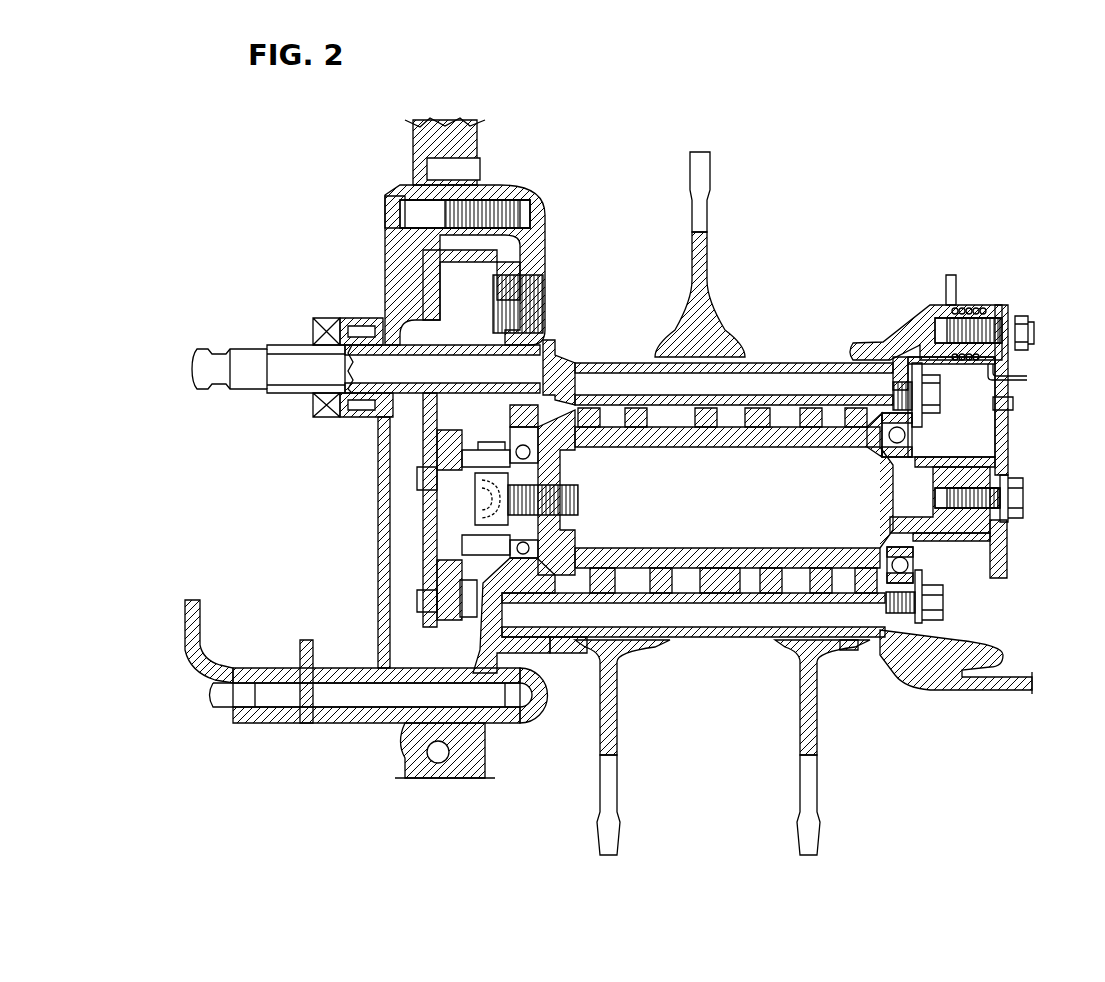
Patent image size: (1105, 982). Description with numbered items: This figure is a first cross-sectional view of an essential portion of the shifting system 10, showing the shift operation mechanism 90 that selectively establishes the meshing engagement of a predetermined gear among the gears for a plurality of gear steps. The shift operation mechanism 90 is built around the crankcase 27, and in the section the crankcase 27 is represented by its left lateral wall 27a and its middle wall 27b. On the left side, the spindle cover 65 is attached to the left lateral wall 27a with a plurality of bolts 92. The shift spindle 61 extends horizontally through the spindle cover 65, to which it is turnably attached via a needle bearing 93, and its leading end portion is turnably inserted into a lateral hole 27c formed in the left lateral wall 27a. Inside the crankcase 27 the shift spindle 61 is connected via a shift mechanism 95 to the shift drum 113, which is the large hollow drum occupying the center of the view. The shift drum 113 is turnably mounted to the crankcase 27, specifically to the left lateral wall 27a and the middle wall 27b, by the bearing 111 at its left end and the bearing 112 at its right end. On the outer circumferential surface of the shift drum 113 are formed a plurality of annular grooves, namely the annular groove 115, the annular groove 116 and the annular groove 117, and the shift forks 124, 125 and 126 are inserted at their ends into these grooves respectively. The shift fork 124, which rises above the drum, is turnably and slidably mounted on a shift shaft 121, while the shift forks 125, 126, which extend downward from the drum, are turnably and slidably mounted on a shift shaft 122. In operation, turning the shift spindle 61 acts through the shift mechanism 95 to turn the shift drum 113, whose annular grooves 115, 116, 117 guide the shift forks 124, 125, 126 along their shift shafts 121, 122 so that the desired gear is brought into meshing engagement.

The shifting system 10 is at (216, 160).
The shift operation mechanism 90 is at (230, 255).
The bolts 92 is at (385, 212).
The needle bearing 93 is at (385, 342).
The shift spindle 61 is at (198, 372).
The spindle cover 65 is at (380, 468).
The shift mechanism 95 is at (408, 535).
The crankcase 27 is at (552, 190).
The left lateral wall 27a is at (538, 250).
The middle wall 27b is at (883, 350).
The lateral hole 27c is at (545, 345).
The shift fork 124 is at (700, 165).
The annular groove 115 is at (608, 378).
The shift shaft 121 is at (765, 378).
The shift drum 113 is at (768, 416).
The annular groove 117 is at (800, 428).
The bearing 112 is at (920, 560).
The bearing 111 is at (512, 562).
The annular groove 116 is at (706, 612).
The shift shaft 122 is at (842, 648).
The shift fork 126 is at (615, 832).
The shift fork 125 is at (815, 832).